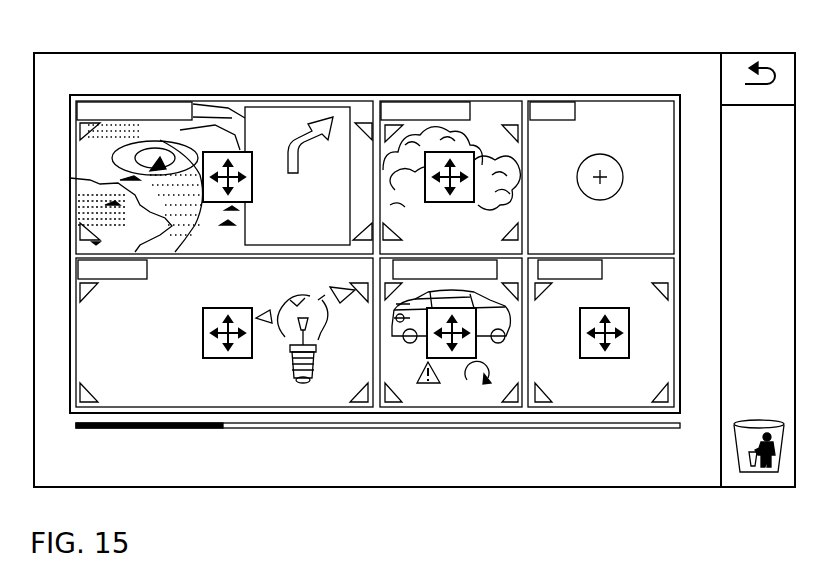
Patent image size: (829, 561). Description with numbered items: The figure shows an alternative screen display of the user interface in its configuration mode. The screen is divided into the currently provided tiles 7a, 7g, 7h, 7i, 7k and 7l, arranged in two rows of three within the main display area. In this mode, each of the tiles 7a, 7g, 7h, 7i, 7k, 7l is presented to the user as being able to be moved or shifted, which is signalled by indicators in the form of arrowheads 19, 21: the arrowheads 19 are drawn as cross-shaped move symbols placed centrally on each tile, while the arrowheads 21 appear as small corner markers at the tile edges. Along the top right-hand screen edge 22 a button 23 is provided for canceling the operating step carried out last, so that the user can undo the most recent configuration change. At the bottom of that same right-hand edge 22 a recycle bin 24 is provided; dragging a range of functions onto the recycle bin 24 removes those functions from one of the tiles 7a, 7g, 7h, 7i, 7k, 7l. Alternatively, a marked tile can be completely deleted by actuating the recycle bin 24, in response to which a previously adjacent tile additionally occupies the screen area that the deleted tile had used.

The tile 7a is at (202, 108).
The tile 7g is at (625, 107).
The tile 7h is at (501, 107).
The tile 7i is at (315, 395).
The tile 7k is at (485, 395).
The tile 7l is at (570, 395).
The arrowhead indicator 19 is at (235, 158).
The arrowhead indicator 21 is at (362, 132).
The screen edge 22 is at (741, 355).
The button 23 is at (776, 63).
The recycle bin 24 is at (771, 473).